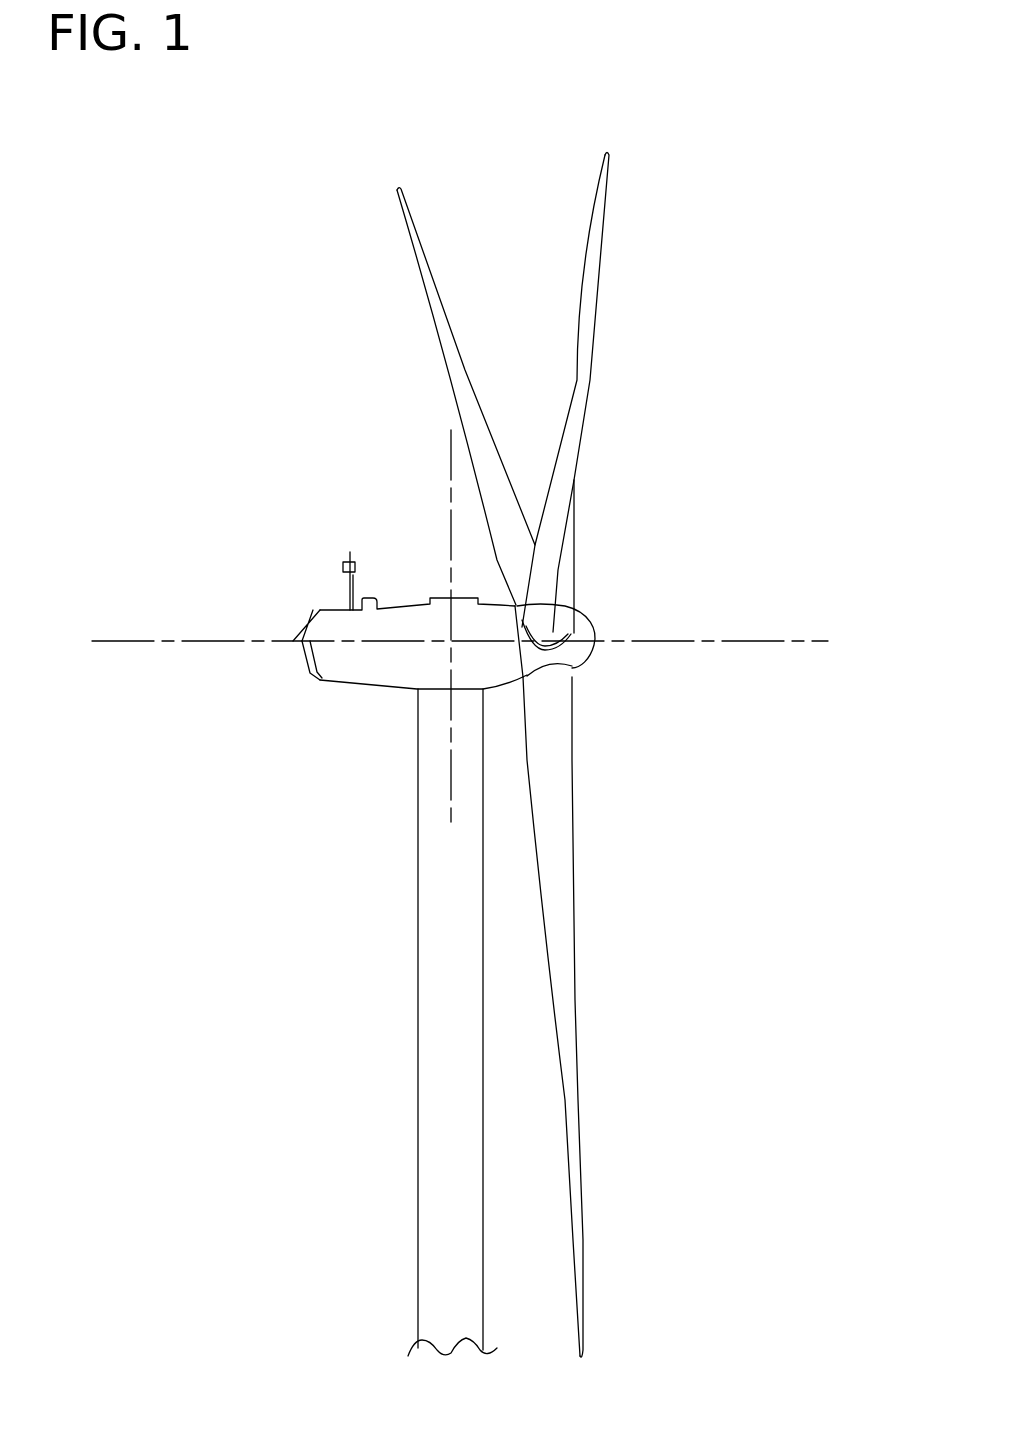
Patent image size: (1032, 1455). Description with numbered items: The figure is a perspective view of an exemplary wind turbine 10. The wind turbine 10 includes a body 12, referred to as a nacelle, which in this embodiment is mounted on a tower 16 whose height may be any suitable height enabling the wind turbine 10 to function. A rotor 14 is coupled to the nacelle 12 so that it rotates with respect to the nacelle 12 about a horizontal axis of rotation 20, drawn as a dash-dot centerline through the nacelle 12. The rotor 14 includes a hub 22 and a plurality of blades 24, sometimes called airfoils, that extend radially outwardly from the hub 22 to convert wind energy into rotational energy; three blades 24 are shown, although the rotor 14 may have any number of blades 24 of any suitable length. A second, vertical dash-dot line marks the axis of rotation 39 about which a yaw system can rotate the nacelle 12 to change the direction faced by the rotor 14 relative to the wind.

The wind turbine 10 is at (212, 351).
The body 12 is at (355, 684).
The rotor 14 is at (595, 708).
The tower 16 is at (417, 938).
The axis of rotation 20 is at (800, 641).
The hub 22 is at (592, 650).
The blades 24 is at (430, 265).
The axis of rotation 39 is at (448, 447).